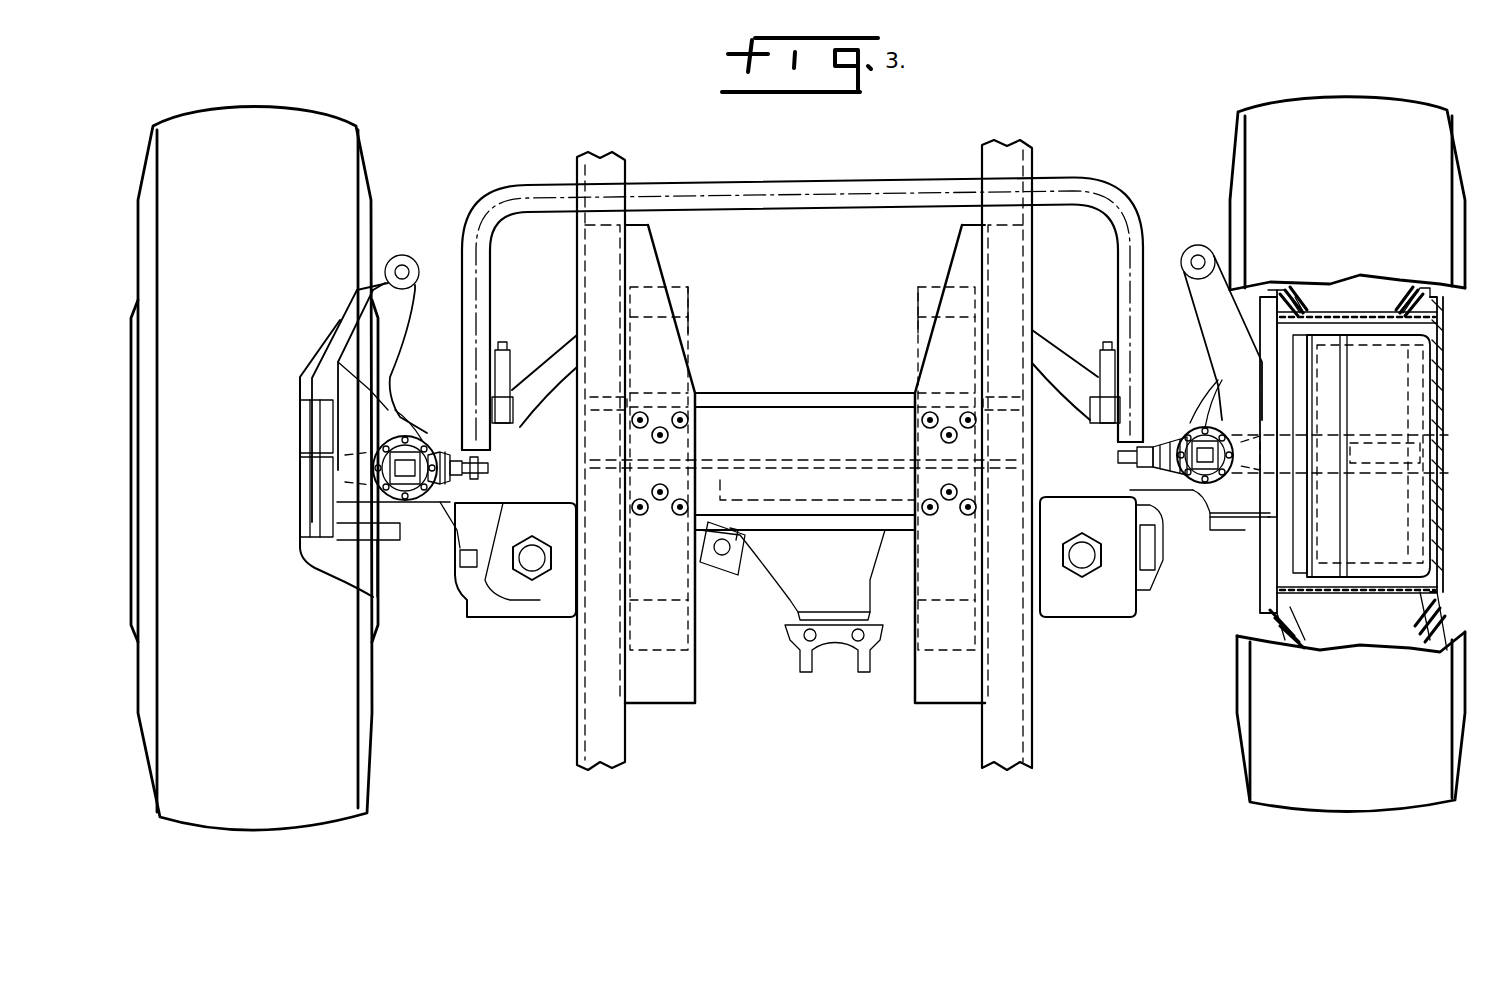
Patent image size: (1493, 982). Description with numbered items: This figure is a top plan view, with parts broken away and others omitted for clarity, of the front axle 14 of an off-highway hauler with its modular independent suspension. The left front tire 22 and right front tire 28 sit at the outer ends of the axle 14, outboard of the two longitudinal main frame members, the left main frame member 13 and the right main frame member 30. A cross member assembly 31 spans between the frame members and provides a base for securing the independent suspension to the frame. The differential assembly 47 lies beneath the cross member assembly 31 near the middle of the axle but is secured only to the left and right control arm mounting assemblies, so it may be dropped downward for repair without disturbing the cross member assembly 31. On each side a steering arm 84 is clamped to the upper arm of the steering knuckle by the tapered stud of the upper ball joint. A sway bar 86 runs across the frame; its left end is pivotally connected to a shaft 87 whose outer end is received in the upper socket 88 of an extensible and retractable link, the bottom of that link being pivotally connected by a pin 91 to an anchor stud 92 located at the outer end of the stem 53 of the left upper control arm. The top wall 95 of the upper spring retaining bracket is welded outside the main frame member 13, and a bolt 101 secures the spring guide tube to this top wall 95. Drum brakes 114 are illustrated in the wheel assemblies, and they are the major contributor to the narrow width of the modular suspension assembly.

The left longitudinal main frame member 13 is at (625, 748).
The axle 14 is at (775, 770).
The left front tire 22 is at (263, 825).
The right front tire 28 is at (1368, 810).
The main frame member 30 is at (988, 750).
The cross member assembly 31 is at (840, 395).
The differential assembly 47 is at (790, 590).
The stem 53 is at (462, 492).
The steering arm 84 is at (432, 233).
The sway bar 86 is at (796, 183).
The shaft 87 is at (490, 467).
The upper socket 88 is at (437, 502).
The pin 91 is at (388, 455).
The anchor stud 92 is at (420, 448).
The top wall 95 is at (521, 600).
The bolt 101 is at (530, 567).
The drum brakes 114 is at (1300, 543).